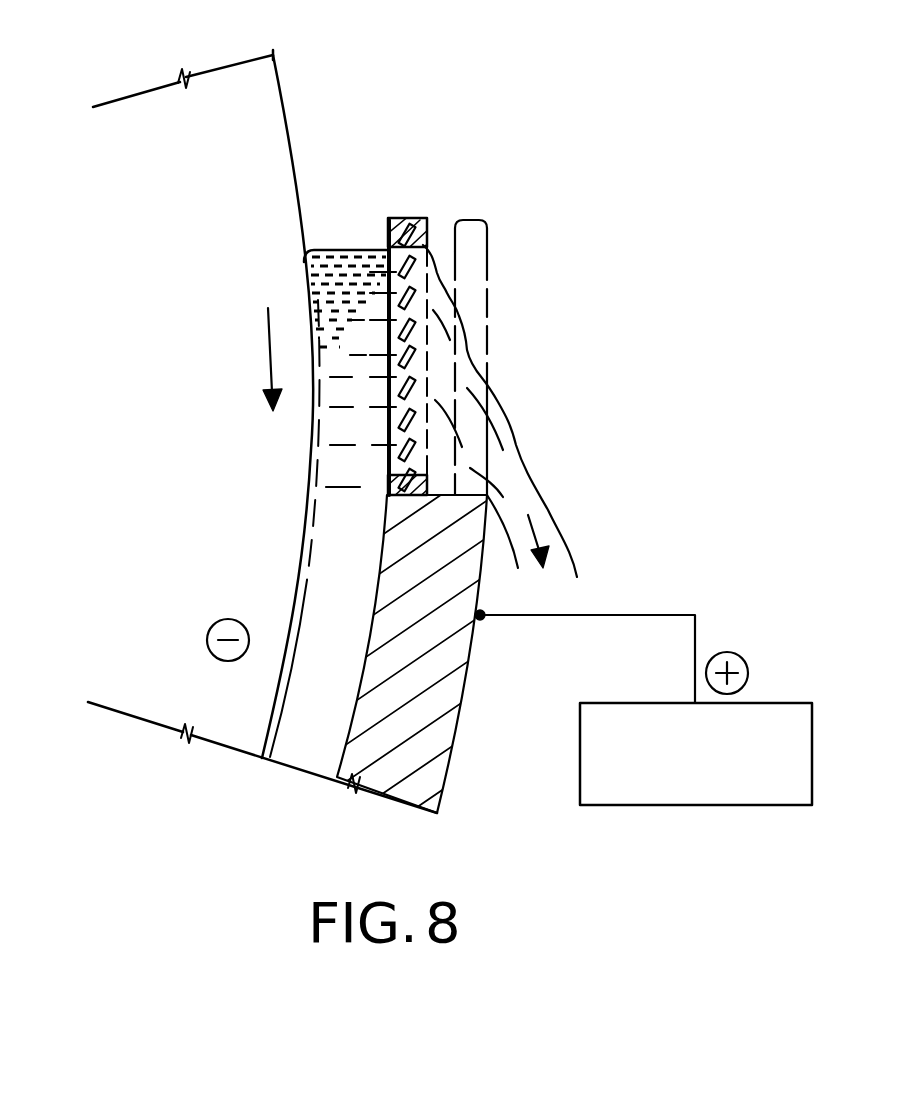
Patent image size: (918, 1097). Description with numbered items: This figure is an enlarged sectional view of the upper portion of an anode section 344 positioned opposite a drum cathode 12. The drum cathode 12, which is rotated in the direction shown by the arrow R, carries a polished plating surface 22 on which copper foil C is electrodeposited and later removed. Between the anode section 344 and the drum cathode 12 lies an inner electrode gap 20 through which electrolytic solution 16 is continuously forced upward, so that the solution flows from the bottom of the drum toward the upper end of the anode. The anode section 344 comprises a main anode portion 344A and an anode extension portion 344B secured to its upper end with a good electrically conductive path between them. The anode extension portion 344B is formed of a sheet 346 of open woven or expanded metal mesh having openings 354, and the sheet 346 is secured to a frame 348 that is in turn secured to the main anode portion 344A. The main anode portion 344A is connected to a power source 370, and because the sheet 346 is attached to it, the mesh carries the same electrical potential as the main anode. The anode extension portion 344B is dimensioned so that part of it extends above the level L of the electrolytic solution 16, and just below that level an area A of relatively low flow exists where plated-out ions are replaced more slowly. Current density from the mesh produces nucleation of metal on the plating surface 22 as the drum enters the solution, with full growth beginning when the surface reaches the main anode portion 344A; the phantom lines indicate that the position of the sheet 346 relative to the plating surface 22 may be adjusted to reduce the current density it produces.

The drum cathode 12 is at (278, 83).
The plating surface 22 is at (287, 128).
The copper foil C is at (282, 698).
The inner electrode gap 20 is at (310, 760).
The area of electrolytic solution A is at (313, 268).
The level of electrolytic solution L is at (342, 243).
The direction of rotation R is at (268, 340).
The frame 348 is at (388, 245).
The openings 354 is at (405, 372).
The sheet 346 is at (400, 307).
The anode extension portion 344B is at (427, 227).
The electrolytic solution 16 is at (562, 545).
The anode section 344 is at (478, 652).
The main anode portion 344A is at (437, 753).
The power source 370 is at (782, 702).